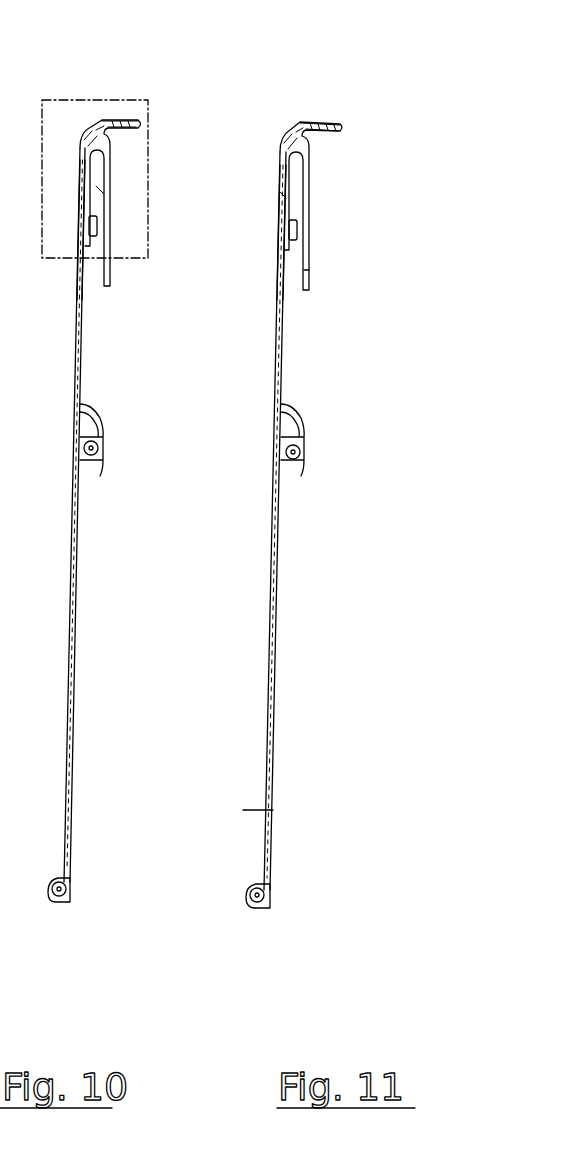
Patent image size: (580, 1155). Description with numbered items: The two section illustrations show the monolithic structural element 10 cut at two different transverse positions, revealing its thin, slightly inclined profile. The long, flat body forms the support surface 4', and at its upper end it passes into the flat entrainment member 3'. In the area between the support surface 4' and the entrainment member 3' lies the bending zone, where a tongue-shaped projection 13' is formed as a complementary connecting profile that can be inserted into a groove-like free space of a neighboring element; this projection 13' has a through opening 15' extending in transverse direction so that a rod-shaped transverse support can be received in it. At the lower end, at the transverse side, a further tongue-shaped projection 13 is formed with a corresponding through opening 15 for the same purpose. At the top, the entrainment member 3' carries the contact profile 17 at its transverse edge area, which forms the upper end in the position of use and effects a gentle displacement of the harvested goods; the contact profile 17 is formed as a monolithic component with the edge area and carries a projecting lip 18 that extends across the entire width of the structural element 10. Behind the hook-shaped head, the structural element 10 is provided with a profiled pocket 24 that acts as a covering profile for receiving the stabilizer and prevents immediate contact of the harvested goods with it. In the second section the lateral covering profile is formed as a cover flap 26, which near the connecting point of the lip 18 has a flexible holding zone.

In FIG. 10, the structural element 10 is at (190, 78).
In FIG. 11, the structural element 10 is at (434, 187).
In FIG. 10, the contact profile 17 is at (68, 91).
In FIG. 11, the contact profile 17 is at (372, 97).
In FIG. 10, the lip 18 is at (120, 118).
In FIG. 11, the lip 18 is at (322, 122).
In FIG. 10, the profiled pocket 24 is at (106, 183).
In FIG. 11, the profiled pocket 24 is at (274, 200).
In FIG. 11, the cover flap 26 is at (310, 264).
In FIG. 10, the entrainment member 3' is at (59, 255).
In FIG. 11, the entrainment member 3' is at (327, 263).
In FIG. 10, the support surface 4' is at (119, 515).
In FIG. 11, the support surface 4' is at (314, 521).
In FIG. 10, the projection 13' is at (132, 416).
In FIG. 11, the projection 13' is at (343, 459).
In FIG. 10, the through opening 15' is at (116, 484).
In FIG. 11, the through opening 15' is at (348, 433).
In FIG. 10, the projection 13 is at (44, 856).
In FIG. 11, the projection 13 is at (234, 861).
In FIG. 10, the through opening 15 is at (98, 870).
In FIG. 11, the through opening 15 is at (300, 890).